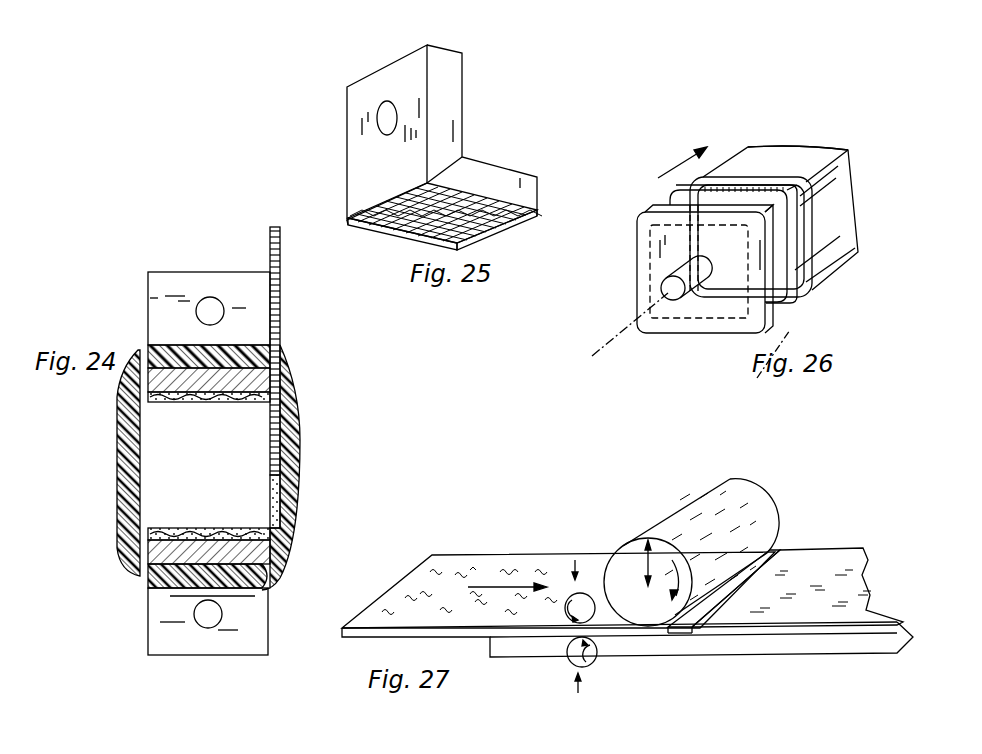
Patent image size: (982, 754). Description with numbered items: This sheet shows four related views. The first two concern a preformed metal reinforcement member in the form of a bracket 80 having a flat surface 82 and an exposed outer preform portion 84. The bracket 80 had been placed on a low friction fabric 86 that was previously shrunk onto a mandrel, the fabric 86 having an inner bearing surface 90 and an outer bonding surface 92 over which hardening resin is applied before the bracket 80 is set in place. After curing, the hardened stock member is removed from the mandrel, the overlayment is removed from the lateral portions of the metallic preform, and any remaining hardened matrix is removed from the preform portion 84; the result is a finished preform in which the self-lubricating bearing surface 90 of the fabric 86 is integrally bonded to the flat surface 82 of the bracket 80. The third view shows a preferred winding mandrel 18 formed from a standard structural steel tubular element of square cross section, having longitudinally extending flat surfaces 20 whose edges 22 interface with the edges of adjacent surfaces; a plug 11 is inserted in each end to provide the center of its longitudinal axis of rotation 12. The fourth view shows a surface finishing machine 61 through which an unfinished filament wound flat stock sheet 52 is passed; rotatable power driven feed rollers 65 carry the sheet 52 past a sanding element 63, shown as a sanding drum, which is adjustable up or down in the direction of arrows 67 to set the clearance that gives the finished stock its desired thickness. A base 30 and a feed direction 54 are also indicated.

In FIG. 24, the bracket 80 is at (200, 272).
In FIG. 25, the bracket 80 is at (396, 61).
In FIG. 24, the exposed outer preform portion 84 is at (150, 298).
In FIG. 25, the exposed outer preform portion 84 is at (347, 101).
In FIG. 24, the flat surface 82 is at (240, 402).
In FIG. 25, the flat surface 82 is at (350, 238).
In FIG. 24, the inner bearing surface 90 is at (240, 528).
In FIG. 25, the inner bearing surface 90 is at (402, 238).
In FIG. 24, the outer bonding surface 92 is at (150, 566).
In FIG. 25, the outer bonding surface 92 is at (394, 205).
In FIG. 24, the low friction fabric 86 is at (150, 532).
In FIG. 25, the low friction fabric 86 is at (538, 210).
In FIG. 26, the plug 11 is at (637, 234).
In FIG. 26, the longitudinal axis of rotation 12 is at (626, 330).
In FIG. 26, the elongated mandrel 18 is at (836, 200).
In FIG. 26, the flat surface 20 is at (840, 150).
In FIG. 26, the longitudinally extending edge 22 is at (733, 150).
In FIG. 27, the base plate 30 is at (368, 637).
In FIG. 27, the flat stock sheet 52 is at (452, 560).
In FIG. 27, the feed direction 54 is at (503, 568).
In FIG. 27, the feed roller 65 is at (588, 582).
In FIG. 27, the arrows 67 is at (644, 548).
In FIG. 27, the sanding element 63 is at (752, 490).
In FIG. 27, the surface finishing machine 61 is at (800, 534).